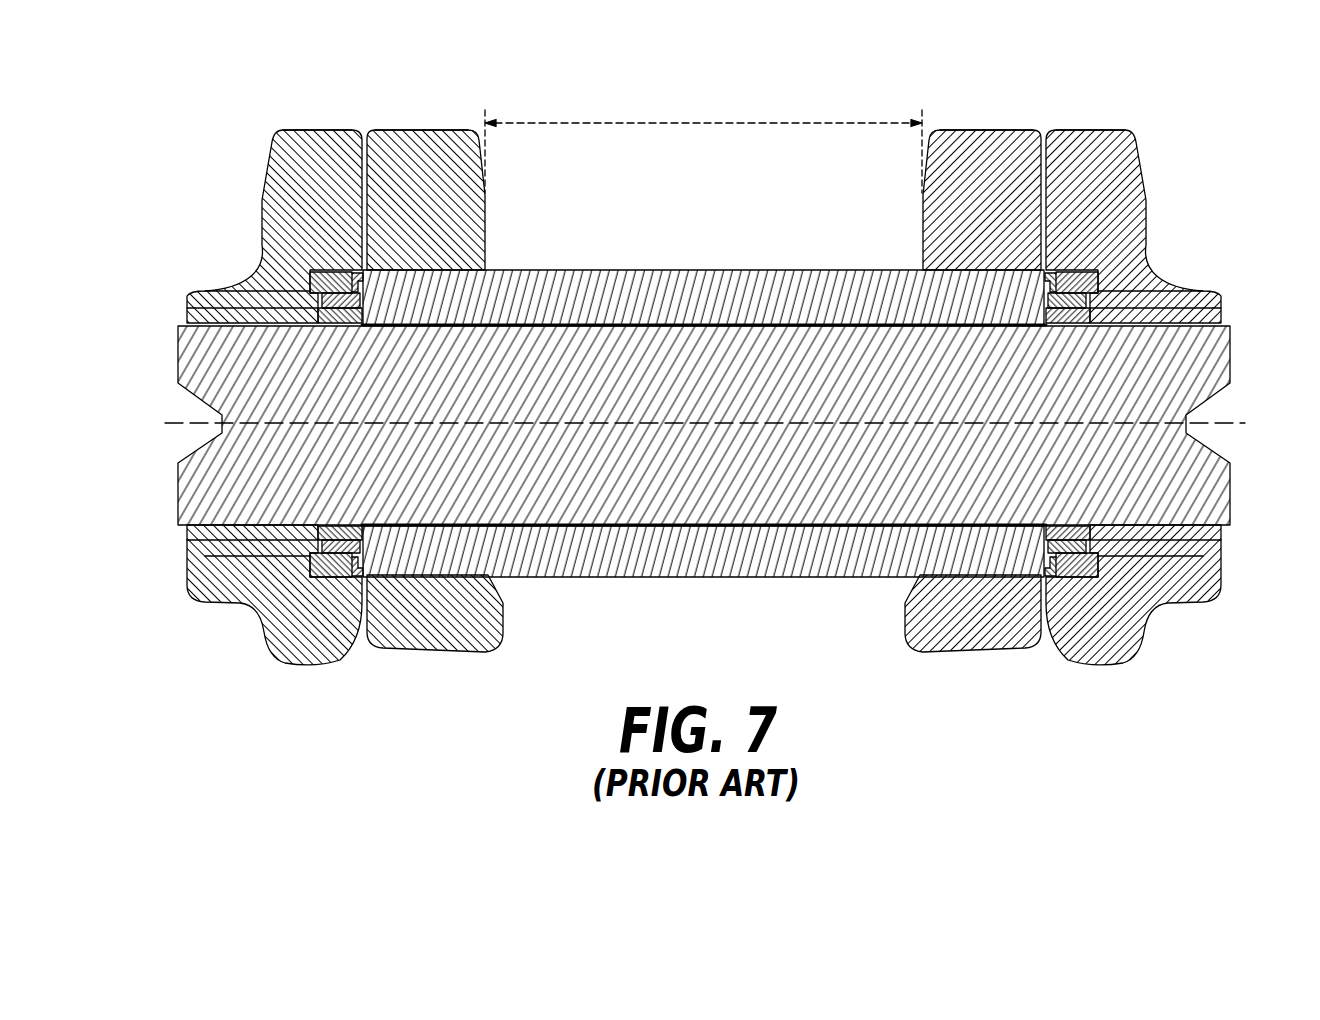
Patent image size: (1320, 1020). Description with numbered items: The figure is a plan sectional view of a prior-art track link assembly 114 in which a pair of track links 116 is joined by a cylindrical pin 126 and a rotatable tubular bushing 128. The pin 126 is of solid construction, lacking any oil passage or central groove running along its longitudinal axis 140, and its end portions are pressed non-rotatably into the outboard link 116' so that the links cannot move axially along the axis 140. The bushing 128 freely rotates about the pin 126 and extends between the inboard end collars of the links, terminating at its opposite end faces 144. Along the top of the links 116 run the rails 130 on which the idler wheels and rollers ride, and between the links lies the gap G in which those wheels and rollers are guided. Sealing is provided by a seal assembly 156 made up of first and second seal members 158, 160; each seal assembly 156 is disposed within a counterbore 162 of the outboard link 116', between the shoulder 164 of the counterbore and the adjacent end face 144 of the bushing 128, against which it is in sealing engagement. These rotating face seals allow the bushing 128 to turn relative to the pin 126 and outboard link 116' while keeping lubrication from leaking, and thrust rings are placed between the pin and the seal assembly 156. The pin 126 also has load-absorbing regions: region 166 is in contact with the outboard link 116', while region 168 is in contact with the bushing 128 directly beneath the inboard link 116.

The link assembly 114 is at (1103, 124).
The track link 116 is at (704, 390).
The outboard link 116' is at (704, 423).
The pin 126 is at (723, 487).
The bushing 128 is at (723, 566).
The rail 130 is at (317, 130).
The longitudinal axis 140 is at (1217, 425).
The end face 144 is at (370, 316).
The seal assembly 156 is at (320, 258).
The first seal member 158 is at (313, 278).
The second seal member 160 is at (362, 288).
The counterbore 162 is at (325, 300).
The shoulder 164 is at (320, 316).
The region 166 is at (268, 333).
The region 168 is at (400, 318).
The gap G is at (683, 123).